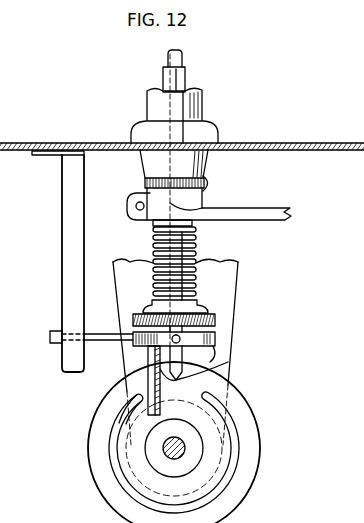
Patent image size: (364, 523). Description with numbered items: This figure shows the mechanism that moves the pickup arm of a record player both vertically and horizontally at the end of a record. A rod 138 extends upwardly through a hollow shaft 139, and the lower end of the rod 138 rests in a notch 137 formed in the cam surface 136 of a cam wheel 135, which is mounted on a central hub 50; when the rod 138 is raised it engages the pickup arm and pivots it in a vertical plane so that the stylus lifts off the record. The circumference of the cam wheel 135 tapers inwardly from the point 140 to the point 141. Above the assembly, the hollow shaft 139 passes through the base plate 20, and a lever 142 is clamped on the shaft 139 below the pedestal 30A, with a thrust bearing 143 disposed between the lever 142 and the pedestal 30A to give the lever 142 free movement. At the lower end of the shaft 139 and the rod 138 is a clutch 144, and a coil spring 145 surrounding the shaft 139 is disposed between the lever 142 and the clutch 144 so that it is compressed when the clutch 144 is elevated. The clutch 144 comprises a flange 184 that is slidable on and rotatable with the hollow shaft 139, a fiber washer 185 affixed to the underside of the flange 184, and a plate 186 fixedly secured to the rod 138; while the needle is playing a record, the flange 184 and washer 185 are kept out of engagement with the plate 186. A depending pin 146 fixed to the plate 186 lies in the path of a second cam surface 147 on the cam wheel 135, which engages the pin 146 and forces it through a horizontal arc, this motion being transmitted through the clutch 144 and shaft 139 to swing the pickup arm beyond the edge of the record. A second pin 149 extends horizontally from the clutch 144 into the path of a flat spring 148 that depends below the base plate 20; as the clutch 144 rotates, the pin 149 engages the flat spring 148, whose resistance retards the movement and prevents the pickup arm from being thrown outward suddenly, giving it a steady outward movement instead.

The base plate 20 is at (92, 145).
The pedestal 30A is at (217, 137).
The axle 50 is at (186, 451).
The cam wheel 135 is at (172, 442).
The cam surface 136 is at (259, 433).
The notch 137 is at (230, 386).
The rod 138 is at (183, 58).
The hollow shaft 139 is at (187, 78).
The point 140 is at (148, 365).
The point 141 is at (184, 374).
The lever 142 is at (276, 205).
The thrust bearing 143 is at (210, 185).
The clutch 144 is at (216, 328).
The coil spring 145 is at (197, 237).
The depending pin 146 is at (134, 405).
The second cam surface 147 is at (122, 477).
The flat spring 148 is at (63, 267).
The pin 149 is at (55, 333).
The flange 184 is at (212, 298).
The fiber washer 185 is at (217, 319).
The plate 186 is at (216, 359).